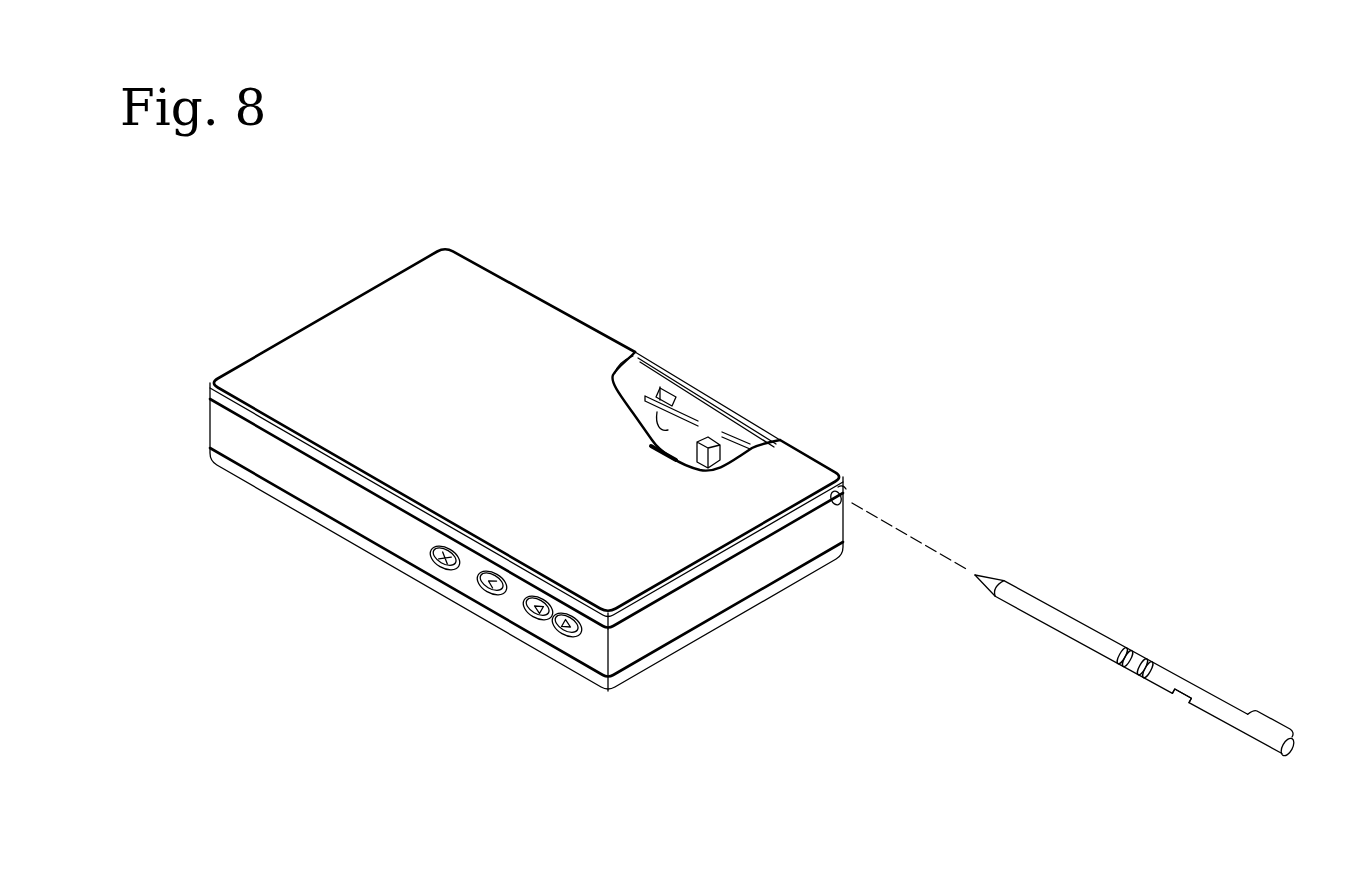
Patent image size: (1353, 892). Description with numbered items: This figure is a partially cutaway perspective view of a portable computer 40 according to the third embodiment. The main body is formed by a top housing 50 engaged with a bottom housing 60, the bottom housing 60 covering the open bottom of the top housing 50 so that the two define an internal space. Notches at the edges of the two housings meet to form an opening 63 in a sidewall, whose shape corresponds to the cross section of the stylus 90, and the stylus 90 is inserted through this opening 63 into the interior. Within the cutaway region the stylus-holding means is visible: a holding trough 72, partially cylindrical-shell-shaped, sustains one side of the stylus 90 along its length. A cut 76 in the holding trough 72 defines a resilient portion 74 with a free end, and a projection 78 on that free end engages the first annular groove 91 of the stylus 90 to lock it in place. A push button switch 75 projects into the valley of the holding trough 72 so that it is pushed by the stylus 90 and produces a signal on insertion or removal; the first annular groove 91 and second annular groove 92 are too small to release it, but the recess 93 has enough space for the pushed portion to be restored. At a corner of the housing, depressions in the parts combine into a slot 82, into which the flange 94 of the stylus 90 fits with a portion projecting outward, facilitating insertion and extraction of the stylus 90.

The portable computer 40 is at (773, 231).
The top housing 50 is at (815, 543).
The bottom housing 60 is at (518, 297).
The opening 63 is at (847, 508).
The holding trough 72 is at (748, 433).
The resilient portion 74 is at (706, 408).
The push button switch 75 is at (737, 424).
The cut 76 is at (673, 396).
The projection 78 is at (675, 398).
The slot 82 is at (846, 490).
The stylus 90 is at (1064, 623).
The first annular groove 91 is at (1121, 651).
The second annular groove 92 is at (1146, 662).
The recess 93 is at (1181, 706).
The flange 94 is at (1260, 720).